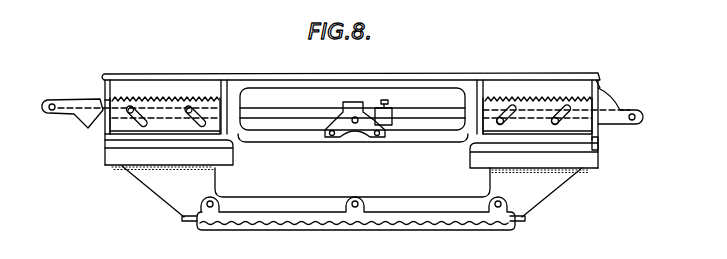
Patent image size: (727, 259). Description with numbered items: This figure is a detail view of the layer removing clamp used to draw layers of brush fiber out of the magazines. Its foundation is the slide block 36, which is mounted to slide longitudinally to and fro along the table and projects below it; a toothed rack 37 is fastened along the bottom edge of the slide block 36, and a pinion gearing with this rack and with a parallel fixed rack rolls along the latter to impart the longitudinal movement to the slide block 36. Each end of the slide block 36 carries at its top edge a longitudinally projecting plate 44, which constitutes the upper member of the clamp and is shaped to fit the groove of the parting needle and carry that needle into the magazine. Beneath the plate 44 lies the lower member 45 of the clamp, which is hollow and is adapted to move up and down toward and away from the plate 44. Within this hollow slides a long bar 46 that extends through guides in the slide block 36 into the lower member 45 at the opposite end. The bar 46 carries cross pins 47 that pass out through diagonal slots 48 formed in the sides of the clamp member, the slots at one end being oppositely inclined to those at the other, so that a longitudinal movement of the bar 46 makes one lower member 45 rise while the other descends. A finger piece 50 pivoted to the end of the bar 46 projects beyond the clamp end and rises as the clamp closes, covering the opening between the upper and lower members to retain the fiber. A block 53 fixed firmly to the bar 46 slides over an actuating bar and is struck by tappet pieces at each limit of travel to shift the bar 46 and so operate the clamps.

The slide block 36 is at (233, 90).
The toothed rack 37 is at (417, 225).
The longitudinally projecting plate 44 is at (187, 73).
The lower member 45 is at (142, 95).
The long bar 46 is at (318, 112).
The cross pins 47 is at (191, 108).
The diagonal slots 48 is at (598, 131).
The finger piece 50 is at (610, 107).
The block 53 is at (392, 126).